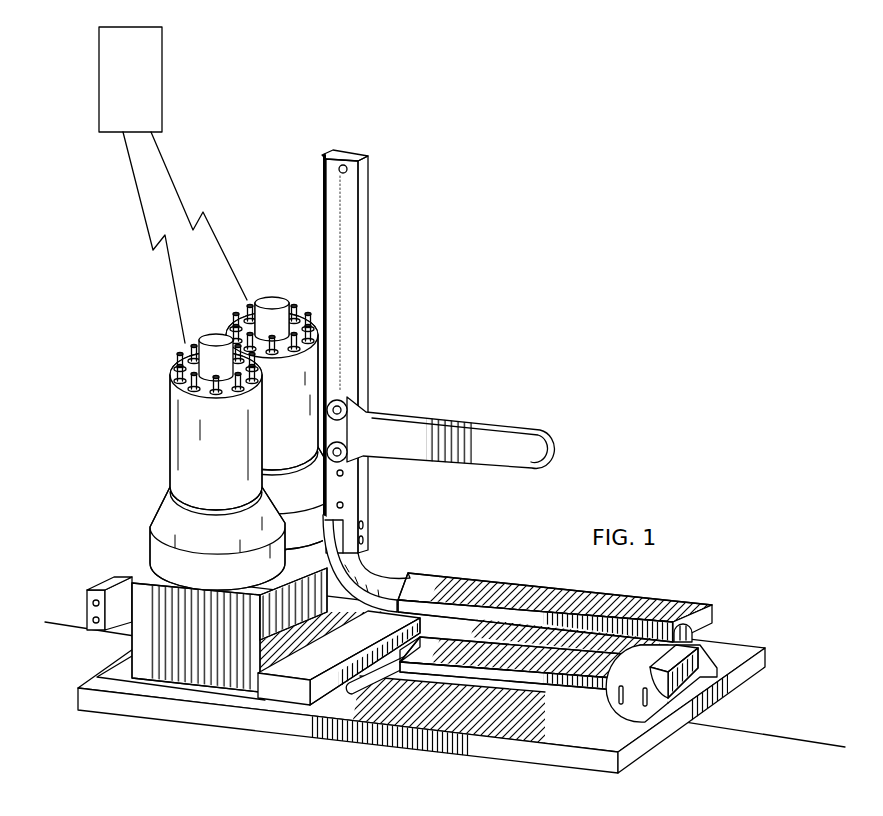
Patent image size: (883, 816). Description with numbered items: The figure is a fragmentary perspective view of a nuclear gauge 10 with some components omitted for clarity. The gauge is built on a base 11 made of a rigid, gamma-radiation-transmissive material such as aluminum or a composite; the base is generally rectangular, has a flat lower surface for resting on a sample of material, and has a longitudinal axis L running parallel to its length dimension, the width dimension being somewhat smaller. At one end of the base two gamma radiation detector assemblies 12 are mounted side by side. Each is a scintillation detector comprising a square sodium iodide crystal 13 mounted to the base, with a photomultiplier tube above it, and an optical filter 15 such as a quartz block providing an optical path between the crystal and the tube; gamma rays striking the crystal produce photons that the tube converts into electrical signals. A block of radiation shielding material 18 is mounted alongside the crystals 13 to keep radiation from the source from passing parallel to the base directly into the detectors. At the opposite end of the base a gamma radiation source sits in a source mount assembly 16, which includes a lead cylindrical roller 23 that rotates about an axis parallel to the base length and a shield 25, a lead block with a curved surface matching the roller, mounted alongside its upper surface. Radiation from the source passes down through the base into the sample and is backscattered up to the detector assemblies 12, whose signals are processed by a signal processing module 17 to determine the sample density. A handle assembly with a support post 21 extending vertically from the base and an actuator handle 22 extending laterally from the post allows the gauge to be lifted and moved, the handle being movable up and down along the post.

The gauge 10 is at (445, 479).
The base 11 is at (572, 762).
The gamma radiation detector assembly 12 is at (226, 406).
The sodium iodide crystal 13 is at (130, 637).
The optical filter 15 is at (118, 588).
The source mount assembly 16 is at (663, 699).
The signal processing module 17 is at (140, 62).
The block of radiation shielding material 18 is at (280, 688).
The support post 21 is at (352, 245).
The actuator handle 22 is at (498, 442).
The cylindrical roller 23 is at (605, 695).
The shield 25 is at (698, 657).
The longitudinal axis L is at (445, 687).